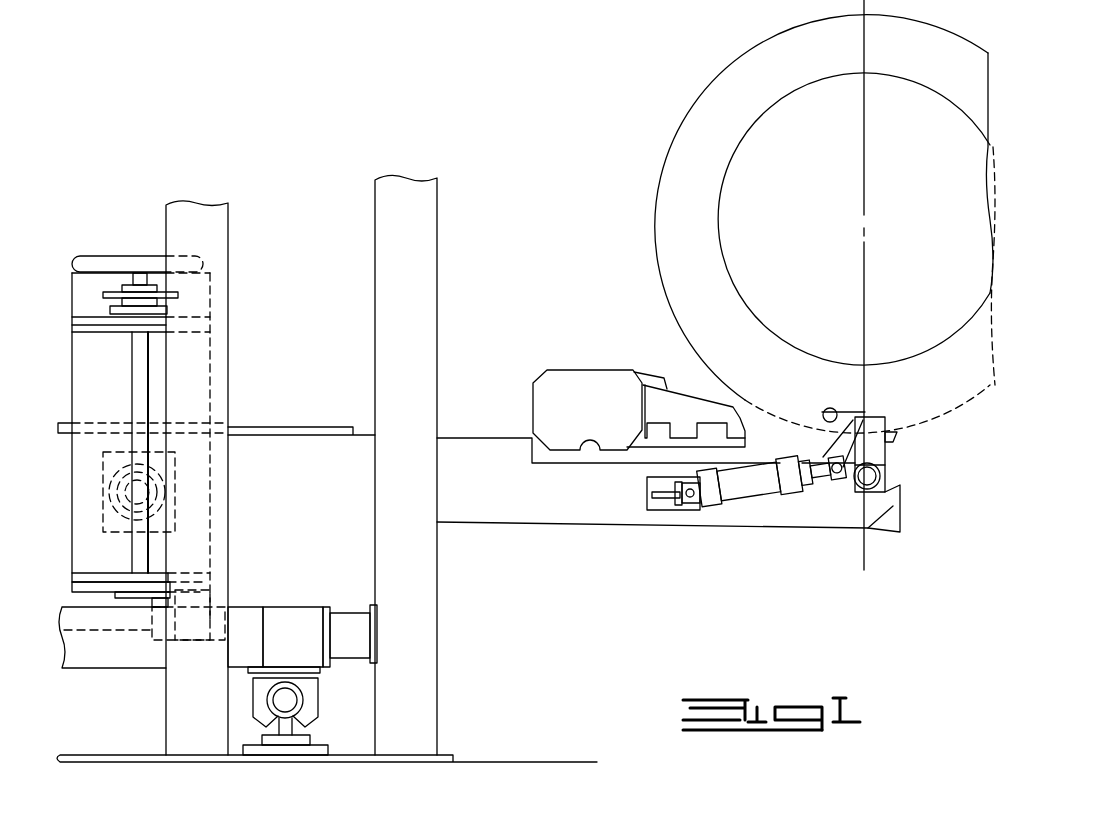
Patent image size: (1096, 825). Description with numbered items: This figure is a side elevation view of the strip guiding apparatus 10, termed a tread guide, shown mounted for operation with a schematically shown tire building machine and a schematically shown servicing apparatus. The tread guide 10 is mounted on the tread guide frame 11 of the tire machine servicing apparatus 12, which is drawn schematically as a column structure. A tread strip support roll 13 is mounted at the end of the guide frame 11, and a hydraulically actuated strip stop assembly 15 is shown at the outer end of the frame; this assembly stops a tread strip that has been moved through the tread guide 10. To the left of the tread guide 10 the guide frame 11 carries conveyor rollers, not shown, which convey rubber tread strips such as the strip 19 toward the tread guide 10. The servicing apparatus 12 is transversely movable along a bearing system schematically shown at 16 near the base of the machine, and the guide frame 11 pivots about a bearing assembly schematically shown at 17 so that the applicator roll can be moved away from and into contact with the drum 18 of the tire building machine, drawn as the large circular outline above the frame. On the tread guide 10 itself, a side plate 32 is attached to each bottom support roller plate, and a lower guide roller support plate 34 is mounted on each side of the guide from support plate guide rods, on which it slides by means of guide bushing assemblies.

The strip guiding apparatus 10 is at (616, 376).
The tread guide frame 11 is at (517, 512).
The tire machine servicing apparatus 12 is at (240, 406).
The tread strip support roll 13 is at (798, 452).
The hydraulically actuated strip stop assembly 15 is at (900, 454).
The bearing system 16 is at (312, 705).
The bearing assembly 17 is at (145, 490).
The drum 18 is at (668, 136).
The rubber tread strip 19 is at (303, 428).
The side plate 32 is at (540, 397).
The lower guide roller support plate 34 is at (689, 402).